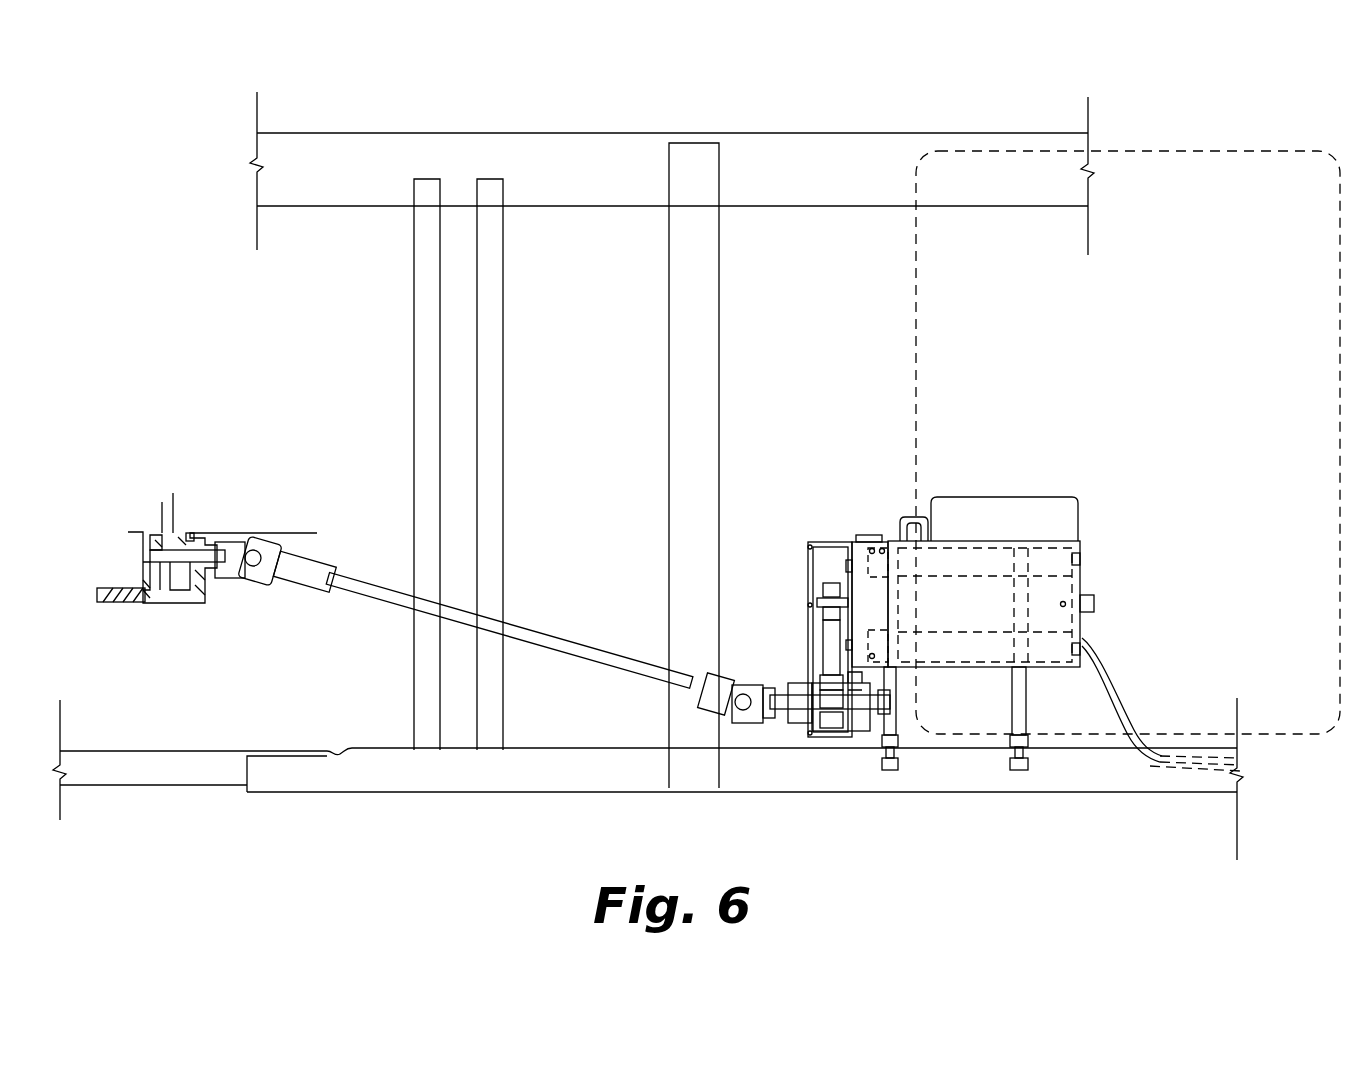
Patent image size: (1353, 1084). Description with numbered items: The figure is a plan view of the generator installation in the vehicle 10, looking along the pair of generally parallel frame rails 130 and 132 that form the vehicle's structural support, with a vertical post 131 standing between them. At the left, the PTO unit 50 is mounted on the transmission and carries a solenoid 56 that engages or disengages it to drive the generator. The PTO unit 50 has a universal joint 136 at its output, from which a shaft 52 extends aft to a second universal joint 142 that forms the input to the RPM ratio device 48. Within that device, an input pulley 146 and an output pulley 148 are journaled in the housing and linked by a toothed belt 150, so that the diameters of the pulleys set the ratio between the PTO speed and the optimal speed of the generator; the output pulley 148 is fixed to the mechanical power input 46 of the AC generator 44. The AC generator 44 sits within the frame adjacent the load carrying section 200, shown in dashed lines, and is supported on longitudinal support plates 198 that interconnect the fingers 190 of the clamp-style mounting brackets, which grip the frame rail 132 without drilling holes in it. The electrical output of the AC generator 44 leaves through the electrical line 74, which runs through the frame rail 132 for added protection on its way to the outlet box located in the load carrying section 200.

The vehicle 10 is at (567, 268).
The frame rail 130 is at (795, 131).
The vertical post 131 is at (700, 324).
The frame rail 132 is at (1062, 794).
The load carrying section 200 is at (915, 197).
The AC generator 44 is at (950, 670).
The fingers 190 is at (905, 720).
The longitudinal support plates 198 is at (1047, 572).
The electrical line 74 is at (1133, 712).
The RPM ratio device 48 is at (806, 571).
The output pulley 148 is at (830, 583).
The mechanical power input 46 is at (812, 605).
The belt 150 is at (822, 660).
The input pulley 146 is at (830, 728).
The universal joint 142 is at (745, 724).
The shaft 52 is at (566, 640).
The universal joint 136 is at (256, 586).
The PTO unit 50 is at (196, 608).
The solenoid 56 is at (133, 608).